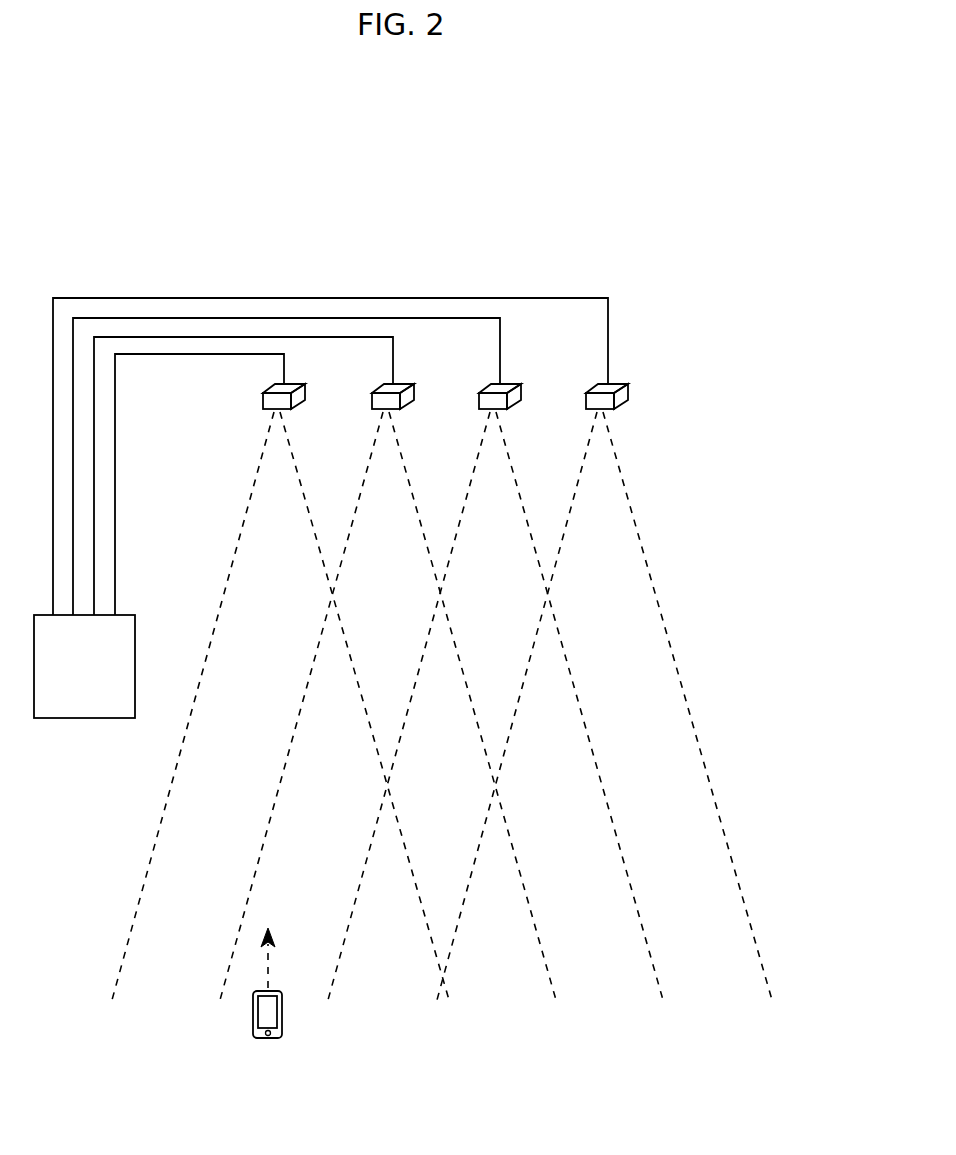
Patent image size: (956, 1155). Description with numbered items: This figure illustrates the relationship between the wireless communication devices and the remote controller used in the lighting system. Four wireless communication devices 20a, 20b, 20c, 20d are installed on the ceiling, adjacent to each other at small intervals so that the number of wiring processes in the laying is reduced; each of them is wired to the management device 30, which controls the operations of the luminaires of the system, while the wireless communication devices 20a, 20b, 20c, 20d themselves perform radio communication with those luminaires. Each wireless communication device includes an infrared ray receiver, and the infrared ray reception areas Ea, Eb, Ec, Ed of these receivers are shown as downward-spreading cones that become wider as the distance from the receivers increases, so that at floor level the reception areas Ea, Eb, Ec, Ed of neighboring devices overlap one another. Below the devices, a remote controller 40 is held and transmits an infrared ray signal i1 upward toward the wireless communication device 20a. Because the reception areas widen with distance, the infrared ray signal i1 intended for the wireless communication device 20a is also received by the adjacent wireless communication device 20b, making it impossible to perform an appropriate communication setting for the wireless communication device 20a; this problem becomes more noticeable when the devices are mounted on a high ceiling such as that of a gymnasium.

The wireless communication device 20a is at (288, 383).
The wireless communication device 20b is at (397, 383).
The wireless communication device 20c is at (505, 383).
The wireless communication device 20d is at (613, 383).
The infrared ray reception area Ea is at (290, 476).
The infrared ray reception area Eb is at (399, 476).
The infrared ray reception area Ec is at (507, 476).
The infrared ray reception area Ed is at (615, 476).
The management device 30 is at (78, 718).
The remote controller 40 is at (283, 1022).
The infrared ray signal i1 is at (277, 958).